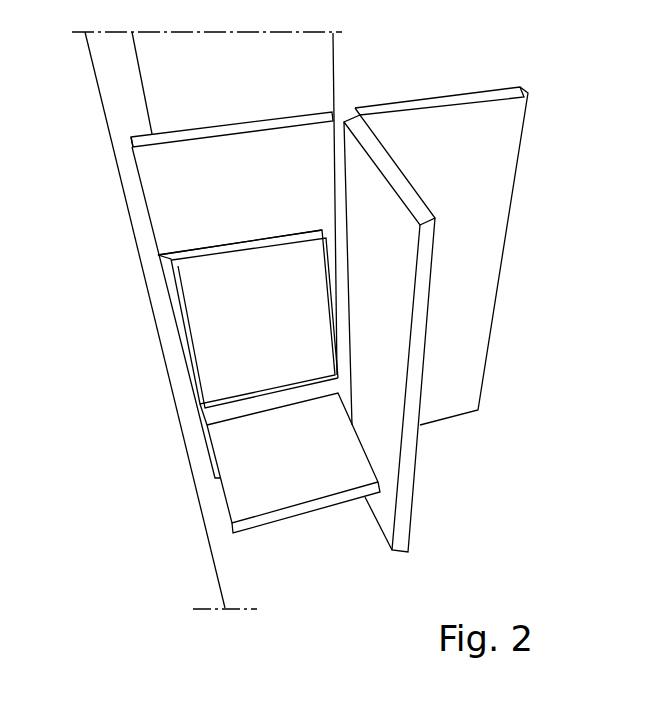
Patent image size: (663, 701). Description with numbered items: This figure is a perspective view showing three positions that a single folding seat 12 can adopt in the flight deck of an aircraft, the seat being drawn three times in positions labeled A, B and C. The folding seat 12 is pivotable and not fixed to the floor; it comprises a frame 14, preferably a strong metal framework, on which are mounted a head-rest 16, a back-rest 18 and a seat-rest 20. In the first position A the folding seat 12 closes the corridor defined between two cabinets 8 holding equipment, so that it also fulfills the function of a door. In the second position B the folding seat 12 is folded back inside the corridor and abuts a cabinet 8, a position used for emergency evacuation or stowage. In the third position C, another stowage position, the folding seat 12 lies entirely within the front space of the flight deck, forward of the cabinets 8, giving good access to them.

The cabinet 8 is at (322, 70).
The folding seat 12 is at (205, 131).
The frame 14 is at (175, 309).
The head-rest 16 is at (150, 195).
The back-rest 18 is at (278, 335).
The seat-rest 20 is at (307, 507).